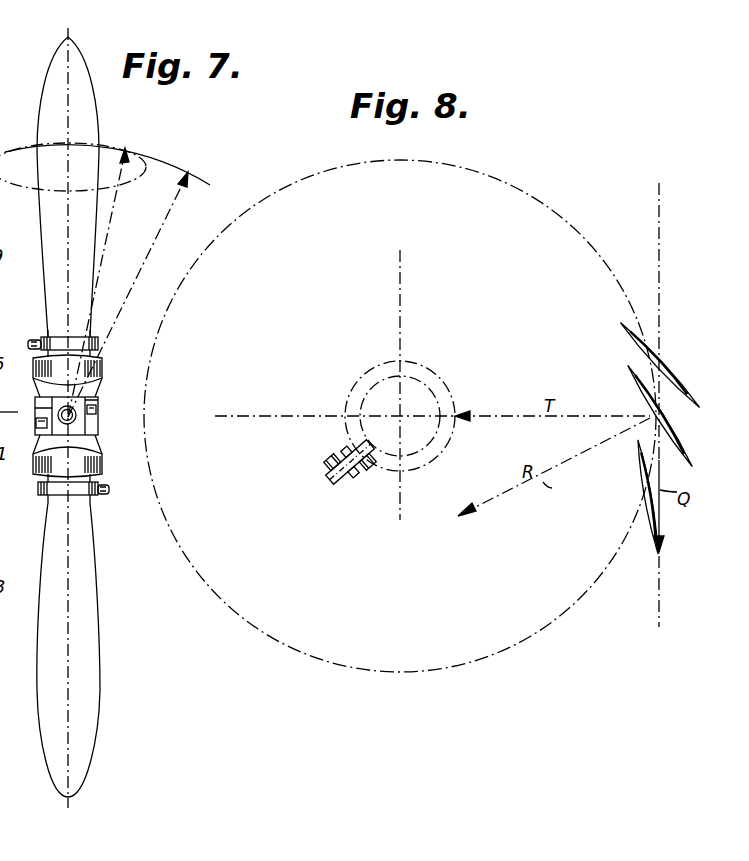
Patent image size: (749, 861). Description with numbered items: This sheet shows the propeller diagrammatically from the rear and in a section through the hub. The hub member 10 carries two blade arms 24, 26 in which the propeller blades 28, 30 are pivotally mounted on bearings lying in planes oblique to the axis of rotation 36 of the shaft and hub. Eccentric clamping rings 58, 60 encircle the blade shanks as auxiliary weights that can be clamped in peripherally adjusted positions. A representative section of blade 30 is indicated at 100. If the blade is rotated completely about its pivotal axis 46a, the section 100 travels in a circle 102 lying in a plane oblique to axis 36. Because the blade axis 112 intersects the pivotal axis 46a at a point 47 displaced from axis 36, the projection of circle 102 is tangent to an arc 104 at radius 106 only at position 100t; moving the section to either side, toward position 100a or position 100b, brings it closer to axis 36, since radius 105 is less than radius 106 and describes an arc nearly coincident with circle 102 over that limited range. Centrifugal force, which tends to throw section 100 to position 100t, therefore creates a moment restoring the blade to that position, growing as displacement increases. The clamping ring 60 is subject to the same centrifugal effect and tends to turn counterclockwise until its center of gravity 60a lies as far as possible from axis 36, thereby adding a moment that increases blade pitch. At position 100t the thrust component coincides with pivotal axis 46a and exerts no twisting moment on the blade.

In FIG. 7, the hub member 10 is at (103, 452).
In FIG. 7, the blade arm 24 is at (103, 472).
In FIG. 7, the blade arm 26 is at (103, 371).
In FIG. 7, the propeller blade 28 is at (95, 609).
In FIG. 7, the propeller blade 30 is at (96, 228).
In FIG. 7, the axis of rotation 36 is at (90, 399).
In FIG. 8, the pivotal axis 46a is at (402, 416).
In FIG. 7, the intersection 47 is at (60, 368).
In FIG. 7, the eccentric clamping ring 58 is at (42, 497).
In FIG. 7, the eccentric clamping ring 60 is at (66, 411).
In FIG. 8, the eccentric clamping ring 60 is at (340, 441).
In FIG. 8, the center of gravity 60a is at (367, 452).
In FIG. 8, the blade section 100 is at (678, 445).
In FIG. 7, the blade section position 100a is at (37, 145).
In FIG. 8, the blade section position 100a is at (647, 540).
In FIG. 7, the blade section position 100b is at (100, 145).
In FIG. 8, the blade section position 100b is at (636, 342).
In FIG. 7, the blade section position 100t is at (68, 143).
In FIG. 8, the circle 102 is at (443, 164).
In FIG. 7, the arc 104 is at (170, 164).
In FIG. 7, the radius 105 is at (88, 291).
In FIG. 7, the radius 106 is at (150, 247).
In FIG. 8, the blade axis 112 is at (658, 282).